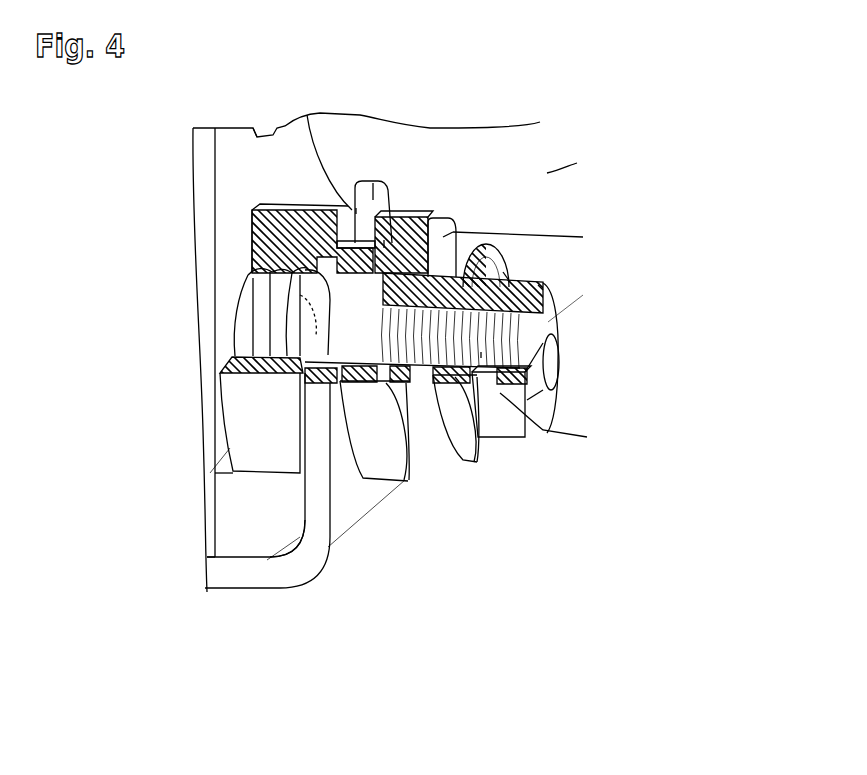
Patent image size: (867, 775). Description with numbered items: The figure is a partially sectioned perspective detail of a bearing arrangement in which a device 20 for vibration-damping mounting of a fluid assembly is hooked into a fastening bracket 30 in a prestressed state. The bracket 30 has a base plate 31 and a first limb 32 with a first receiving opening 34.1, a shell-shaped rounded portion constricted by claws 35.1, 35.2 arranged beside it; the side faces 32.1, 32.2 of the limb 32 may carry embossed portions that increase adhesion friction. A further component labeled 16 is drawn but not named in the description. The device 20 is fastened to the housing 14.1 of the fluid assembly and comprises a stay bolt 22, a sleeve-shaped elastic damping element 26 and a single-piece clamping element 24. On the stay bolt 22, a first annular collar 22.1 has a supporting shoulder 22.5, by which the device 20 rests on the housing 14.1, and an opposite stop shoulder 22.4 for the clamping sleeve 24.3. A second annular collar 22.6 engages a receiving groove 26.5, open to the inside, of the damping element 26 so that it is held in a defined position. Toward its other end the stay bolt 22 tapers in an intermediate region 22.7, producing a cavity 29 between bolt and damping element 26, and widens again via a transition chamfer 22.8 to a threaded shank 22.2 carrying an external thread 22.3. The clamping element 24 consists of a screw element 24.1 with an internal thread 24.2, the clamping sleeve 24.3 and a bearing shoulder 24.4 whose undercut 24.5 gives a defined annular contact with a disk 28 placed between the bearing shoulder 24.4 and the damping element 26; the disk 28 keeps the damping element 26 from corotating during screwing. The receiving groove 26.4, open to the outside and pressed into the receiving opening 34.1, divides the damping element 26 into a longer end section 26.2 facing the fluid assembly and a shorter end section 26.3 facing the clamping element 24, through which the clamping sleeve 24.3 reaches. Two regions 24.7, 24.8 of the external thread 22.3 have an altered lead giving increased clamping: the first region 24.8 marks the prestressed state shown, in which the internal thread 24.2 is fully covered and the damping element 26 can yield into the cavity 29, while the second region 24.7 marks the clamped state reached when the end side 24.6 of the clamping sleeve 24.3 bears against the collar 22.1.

The housing 14.1 is at (203, 170).
The housing 16 is at (584, 125).
The device for vibration-damping mounting 20 is at (610, 333).
The stay bolt 22 is at (568, 360).
The first annular collar 22.1 is at (242, 335).
The threaded shank 22.2 is at (548, 367).
The external thread 22.3 is at (520, 400).
The stop shoulder 22.4 is at (333, 320).
The supporting shoulder 22.5 is at (245, 330).
The second annular collar 22.6 is at (255, 335).
The intermediate region 22.7 is at (260, 290).
The transition chamfer 22.8 is at (303, 210).
The clamping element 24 is at (525, 455).
The screw element 24.1 is at (550, 405).
The internal thread 24.2 is at (556, 333).
The clamping sleeve 24.3 is at (427, 395).
The bearing shoulder 24.4 is at (463, 456).
The undercut 24.5 is at (503, 272).
The end side 24.6 is at (356, 208).
The second region 24.7 is at (538, 285).
The first region 24.8 is at (481, 352).
The elastic damping element 26 is at (247, 444).
The longer end section 26.2 is at (243, 428).
The shorter end section 26.3 is at (384, 240).
The receiving groove open to the outside 26.4 is at (373, 200).
The receiving groove open to the inside 26.5 is at (262, 210).
The disk 28 is at (443, 237).
The cavity 29 is at (377, 190).
The bracket 30 is at (332, 571).
The base plate 31 is at (233, 541).
The first limb 32 is at (338, 490).
The side face 32.1 is at (322, 557).
The side face 32.2 is at (300, 493).
The first receiving opening 34.1 is at (360, 500).
The claw 35.1 is at (308, 388).
The claw 35.2 is at (340, 245).